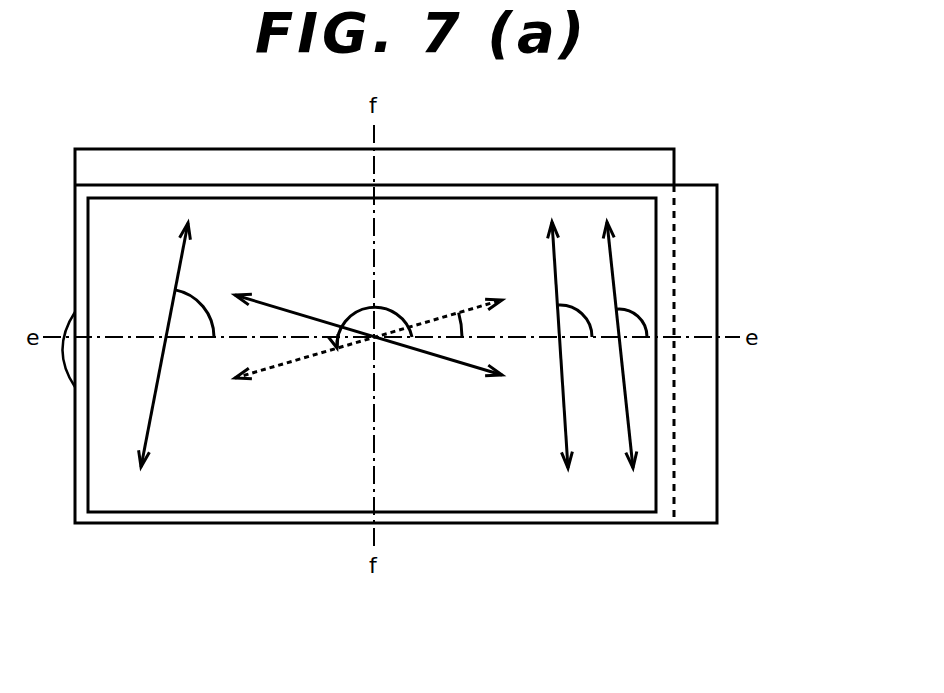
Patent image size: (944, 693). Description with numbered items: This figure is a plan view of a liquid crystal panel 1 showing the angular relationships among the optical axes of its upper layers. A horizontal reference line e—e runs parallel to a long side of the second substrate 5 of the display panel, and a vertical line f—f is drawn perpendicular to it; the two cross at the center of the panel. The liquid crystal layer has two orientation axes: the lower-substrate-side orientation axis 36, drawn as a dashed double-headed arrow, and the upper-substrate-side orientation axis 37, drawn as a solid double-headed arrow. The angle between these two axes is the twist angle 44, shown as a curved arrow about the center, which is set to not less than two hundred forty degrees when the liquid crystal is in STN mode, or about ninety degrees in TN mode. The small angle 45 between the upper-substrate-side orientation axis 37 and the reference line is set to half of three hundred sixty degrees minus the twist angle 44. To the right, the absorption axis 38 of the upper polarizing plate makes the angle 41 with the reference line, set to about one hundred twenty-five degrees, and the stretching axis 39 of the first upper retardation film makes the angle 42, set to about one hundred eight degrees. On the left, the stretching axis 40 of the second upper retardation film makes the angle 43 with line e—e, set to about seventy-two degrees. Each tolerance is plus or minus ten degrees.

The band / upper housing portion 1 is at (133, 165).
The second substrate 5 is at (700, 450).
The lower-substrate-side orientation axis 36 is at (444, 317).
The upper-substrate-side orientation axis 37 is at (440, 353).
The absorption axis of the upper polarizing plate 38 is at (632, 420).
The stretching axis of the first upper retardation film 39 is at (563, 413).
The stretching axis of the second upper retardation film 40 is at (155, 403).
The angle of the polarizing plate absorption axis 41 is at (640, 317).
The angle of the first upper retardation film stretching axis 42 is at (588, 310).
The angle of the second upper retardation film stretching axis 43 is at (202, 292).
The twist angle 44 is at (365, 302).
The angle of the upper-substrate-side orientation axis 45 is at (470, 322).